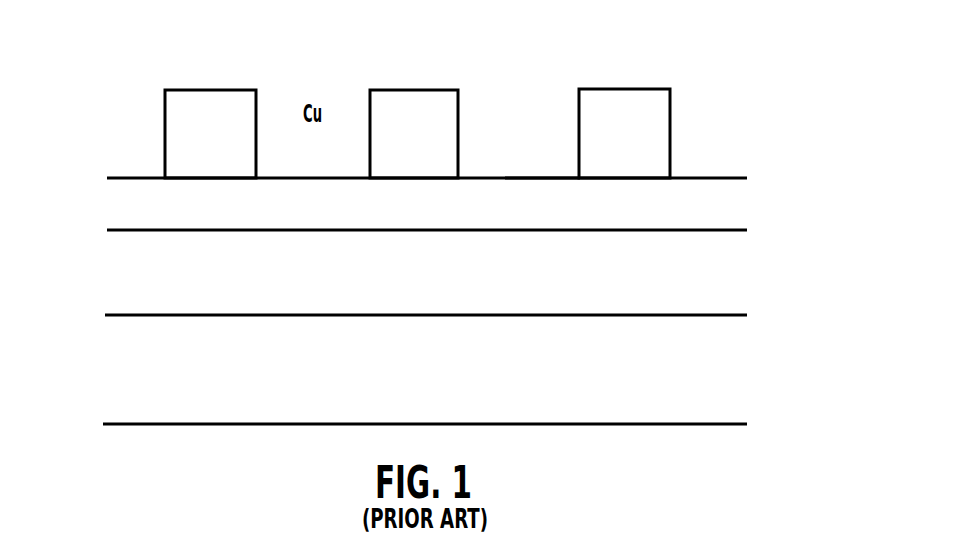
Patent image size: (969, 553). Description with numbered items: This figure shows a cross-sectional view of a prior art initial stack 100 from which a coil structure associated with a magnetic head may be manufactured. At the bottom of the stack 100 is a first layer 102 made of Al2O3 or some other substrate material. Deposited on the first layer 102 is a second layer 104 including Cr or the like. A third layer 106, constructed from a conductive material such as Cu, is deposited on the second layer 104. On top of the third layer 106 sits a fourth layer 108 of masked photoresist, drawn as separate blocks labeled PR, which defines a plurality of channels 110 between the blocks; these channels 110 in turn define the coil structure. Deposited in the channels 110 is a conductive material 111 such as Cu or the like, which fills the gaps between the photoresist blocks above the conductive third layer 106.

The initial stack 100 is at (403, 346).
The first layer 102 is at (128, 374).
The second layer 104 is at (128, 275).
The third layer 106 is at (128, 197).
The fourth layer 108 is at (158, 130).
The channels 110 is at (520, 84).
The conductive material 111 is at (526, 138).